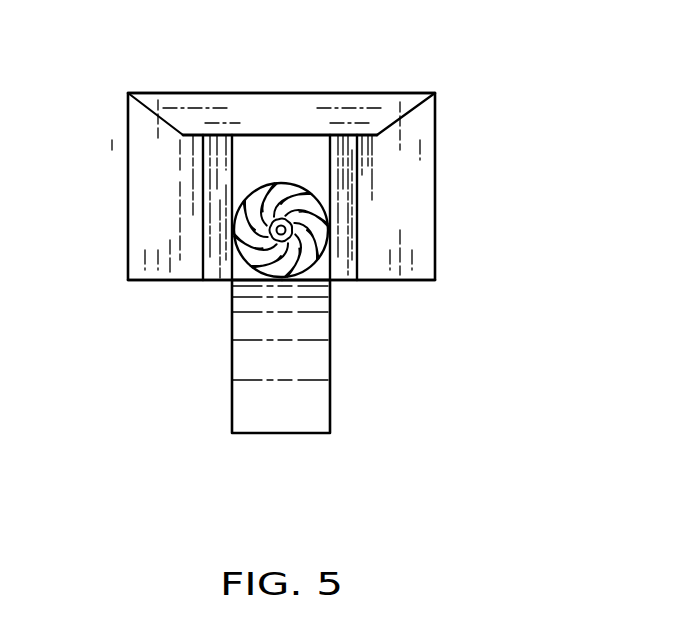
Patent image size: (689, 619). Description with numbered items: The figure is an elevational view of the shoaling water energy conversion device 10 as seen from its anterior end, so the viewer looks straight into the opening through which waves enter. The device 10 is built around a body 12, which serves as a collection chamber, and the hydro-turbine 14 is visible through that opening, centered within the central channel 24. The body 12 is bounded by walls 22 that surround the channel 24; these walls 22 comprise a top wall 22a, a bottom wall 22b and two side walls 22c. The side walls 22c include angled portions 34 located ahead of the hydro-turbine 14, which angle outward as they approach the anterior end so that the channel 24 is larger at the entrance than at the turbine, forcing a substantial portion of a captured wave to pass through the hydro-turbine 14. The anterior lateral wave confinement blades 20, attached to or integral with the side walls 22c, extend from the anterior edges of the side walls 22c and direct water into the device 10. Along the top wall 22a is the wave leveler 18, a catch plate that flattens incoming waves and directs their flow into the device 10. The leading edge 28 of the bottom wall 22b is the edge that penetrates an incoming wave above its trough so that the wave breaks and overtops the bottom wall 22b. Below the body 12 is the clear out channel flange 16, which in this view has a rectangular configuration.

The shoaling water energy conversion device 10 is at (500, 92).
The body 12 is at (410, 217).
The hydro-turbine 14 is at (262, 205).
The clear out channel flange 16 is at (272, 412).
The wave leveler 18 is at (342, 108).
The anterior lateral wave confinement blades 20 is at (420, 245).
The walls 22 is at (343, 283).
The top wall 22a is at (298, 106).
The bottom wall 22b is at (220, 282).
The side walls 22c is at (350, 188).
The central channel 24 is at (248, 153).
The leading edge 28 is at (283, 245).
The angled portions 34 is at (352, 247).